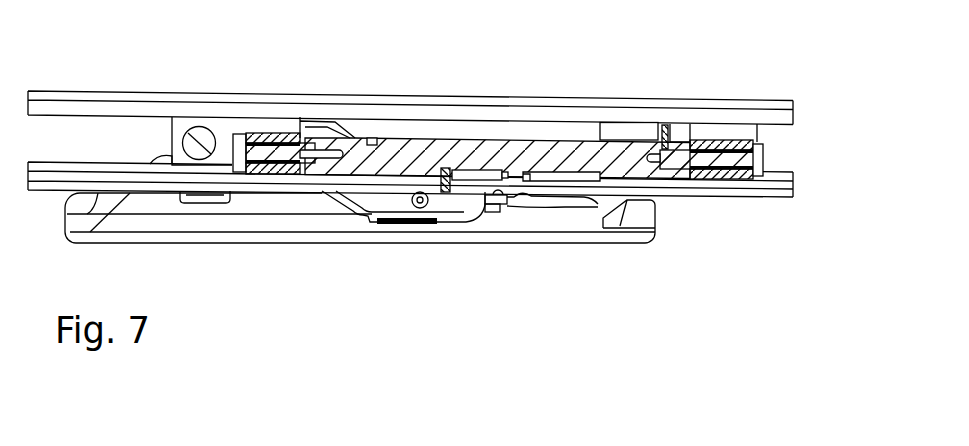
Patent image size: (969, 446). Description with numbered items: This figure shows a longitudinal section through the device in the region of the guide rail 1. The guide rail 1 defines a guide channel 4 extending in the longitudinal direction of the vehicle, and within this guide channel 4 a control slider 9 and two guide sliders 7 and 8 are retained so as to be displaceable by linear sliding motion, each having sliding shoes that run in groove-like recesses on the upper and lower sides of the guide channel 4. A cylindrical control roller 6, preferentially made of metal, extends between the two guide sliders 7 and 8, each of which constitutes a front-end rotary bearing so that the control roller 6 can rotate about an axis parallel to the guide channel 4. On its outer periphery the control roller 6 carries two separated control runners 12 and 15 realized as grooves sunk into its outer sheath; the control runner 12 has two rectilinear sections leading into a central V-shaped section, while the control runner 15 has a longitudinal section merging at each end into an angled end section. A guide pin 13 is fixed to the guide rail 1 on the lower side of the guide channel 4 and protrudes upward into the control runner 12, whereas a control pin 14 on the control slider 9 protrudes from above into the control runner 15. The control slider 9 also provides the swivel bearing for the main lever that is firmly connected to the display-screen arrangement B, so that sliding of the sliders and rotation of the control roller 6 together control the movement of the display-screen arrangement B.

The guide rail 1 is at (410, 112).
The guide channel 4 is at (64, 130).
The control roller 6 is at (424, 137).
The guide slider 7 is at (753, 145).
The guide slider 8 is at (172, 138).
The control slider 9 is at (612, 130).
The control runner 12 is at (481, 170).
The guide pin 13 is at (447, 168).
The control pin 14 is at (672, 142).
The control runner 15 is at (371, 137).
The display-screen arrangement B is at (593, 232).